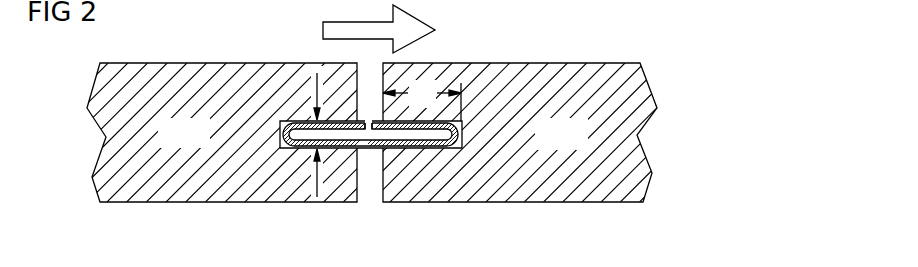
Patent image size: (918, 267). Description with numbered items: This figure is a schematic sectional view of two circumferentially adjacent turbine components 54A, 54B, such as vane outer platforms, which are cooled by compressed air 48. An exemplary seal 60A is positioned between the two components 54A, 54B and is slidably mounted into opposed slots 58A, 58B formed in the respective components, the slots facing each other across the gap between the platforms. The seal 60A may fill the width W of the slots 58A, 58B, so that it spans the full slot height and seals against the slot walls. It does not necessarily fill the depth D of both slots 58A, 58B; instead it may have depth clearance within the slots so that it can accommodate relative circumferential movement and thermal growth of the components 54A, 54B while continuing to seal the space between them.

The turbine component 54A is at (204, 144).
The turbine component 54B is at (582, 146).
The slot 58A is at (281, 150).
The slot 58B is at (458, 150).
The seal 60A is at (371, 150).
The compressed air 48 is at (422, 31).
The width of the slots W is at (317, 82).
The depth of the slots D is at (422, 101).